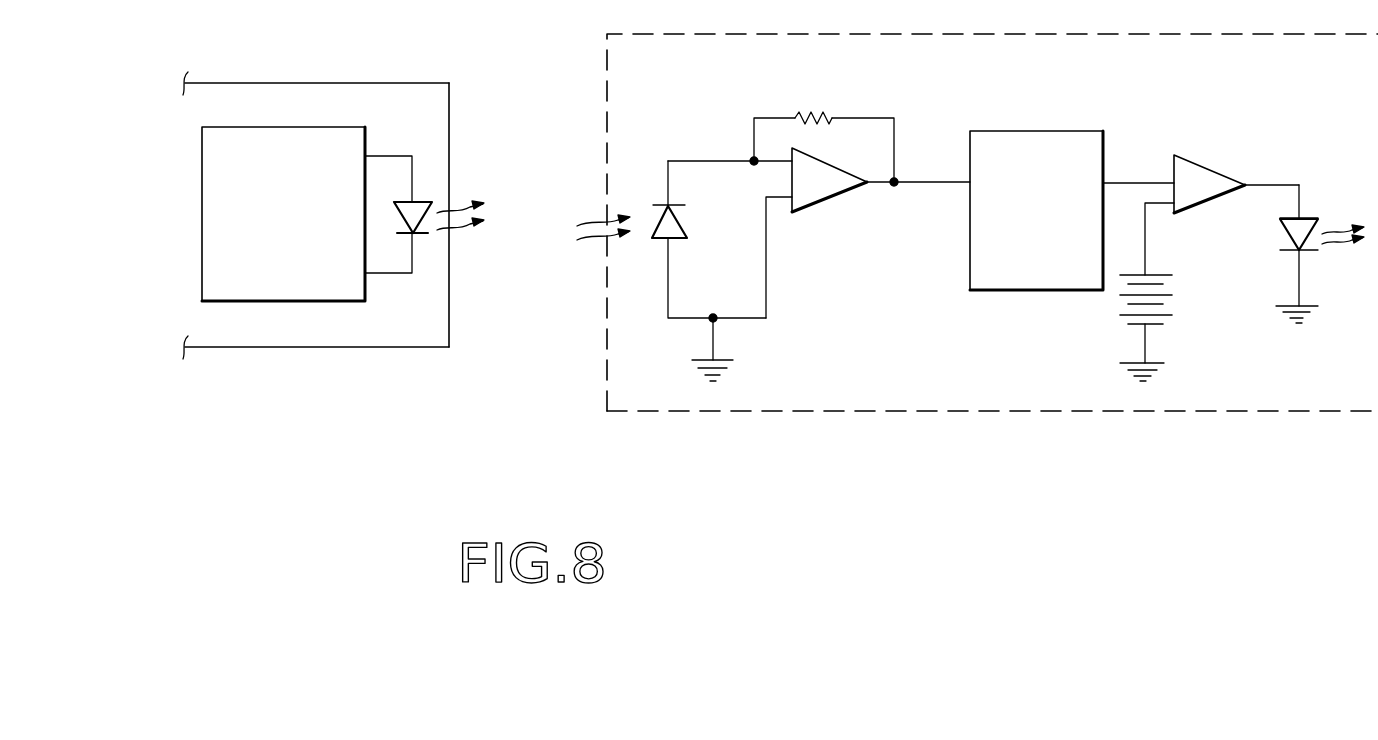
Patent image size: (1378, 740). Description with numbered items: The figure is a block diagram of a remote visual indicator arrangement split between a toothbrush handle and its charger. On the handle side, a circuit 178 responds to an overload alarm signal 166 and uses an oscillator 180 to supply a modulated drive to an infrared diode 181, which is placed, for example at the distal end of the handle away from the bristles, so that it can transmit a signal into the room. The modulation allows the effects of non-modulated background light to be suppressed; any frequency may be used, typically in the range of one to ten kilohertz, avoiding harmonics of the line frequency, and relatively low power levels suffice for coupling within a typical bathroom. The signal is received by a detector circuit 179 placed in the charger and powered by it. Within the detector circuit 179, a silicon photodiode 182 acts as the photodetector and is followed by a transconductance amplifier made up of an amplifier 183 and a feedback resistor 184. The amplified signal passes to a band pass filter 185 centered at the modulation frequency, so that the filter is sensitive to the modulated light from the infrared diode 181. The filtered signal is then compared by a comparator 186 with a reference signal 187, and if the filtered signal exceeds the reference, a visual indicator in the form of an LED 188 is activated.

The overload alarm signal 166 is at (197, 170).
The circuit 178 is at (432, 300).
The detector circuit 179 is at (733, 412).
The oscillator 180 is at (283, 127).
The infrared diode 181 is at (413, 175).
The silicon photodiode 182 is at (655, 240).
The amplifier 183 is at (838, 200).
The feedback resistor 184 is at (817, 112).
The band pass filter 185 is at (1078, 131).
The comparator 186 is at (1212, 168).
The reference signal 187 is at (1145, 245).
The LED 188 is at (1314, 218).